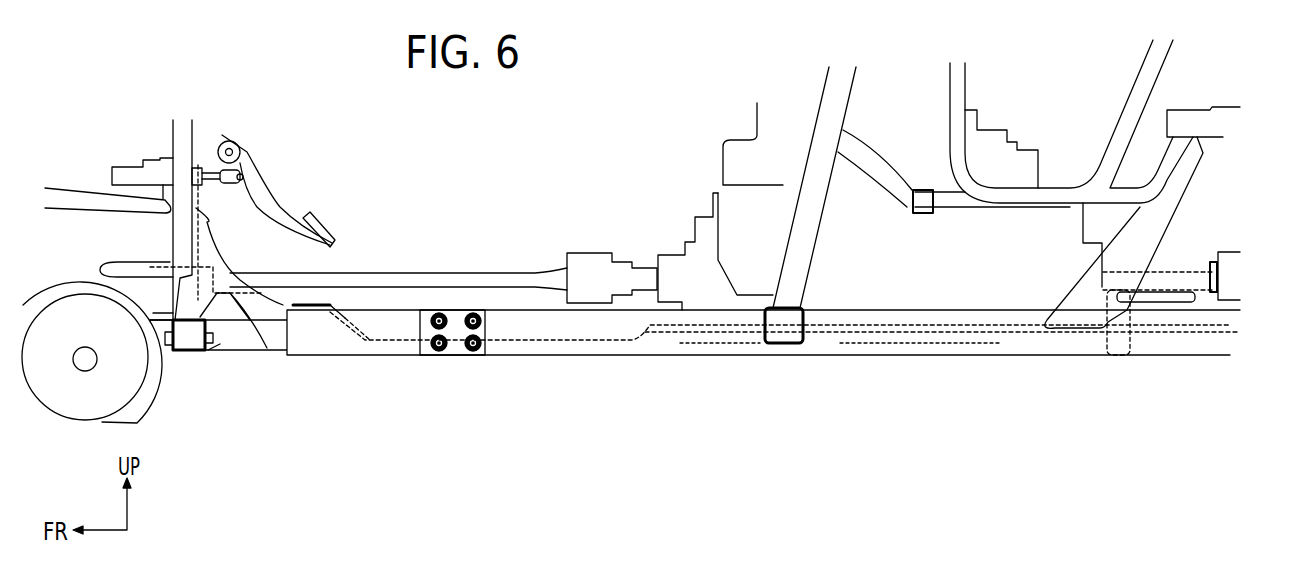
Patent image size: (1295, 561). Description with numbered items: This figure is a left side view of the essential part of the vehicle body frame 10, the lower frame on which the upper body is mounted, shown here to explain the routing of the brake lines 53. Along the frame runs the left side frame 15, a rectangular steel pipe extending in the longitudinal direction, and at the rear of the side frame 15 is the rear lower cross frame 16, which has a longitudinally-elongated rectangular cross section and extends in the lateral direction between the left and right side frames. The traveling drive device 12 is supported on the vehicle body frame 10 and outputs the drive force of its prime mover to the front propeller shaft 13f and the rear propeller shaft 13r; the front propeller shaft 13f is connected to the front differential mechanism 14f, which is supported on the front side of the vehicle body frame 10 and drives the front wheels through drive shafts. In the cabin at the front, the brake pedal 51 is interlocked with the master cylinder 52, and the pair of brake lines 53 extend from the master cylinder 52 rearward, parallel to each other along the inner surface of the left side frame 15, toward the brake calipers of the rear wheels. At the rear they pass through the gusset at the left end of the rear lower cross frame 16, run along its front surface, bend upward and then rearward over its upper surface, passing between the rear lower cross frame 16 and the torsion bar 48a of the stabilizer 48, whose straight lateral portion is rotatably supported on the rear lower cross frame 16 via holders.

The vehicle body frame 10 is at (375, 356).
The traveling drive device 12 is at (724, 144).
The front propeller shaft 13f is at (468, 273).
The rear propeller shaft 13r is at (1185, 277).
The front differential mechanism 14f is at (115, 265).
The side frame 15 is at (525, 357).
The rear lower cross frame 16 is at (1117, 357).
The stabilizer 48 is at (1178, 354).
The torsion bar 48a is at (1158, 302).
The brake pedal 51 is at (323, 227).
The master cylinder 52 is at (127, 168).
The brake line 53 is at (592, 346).